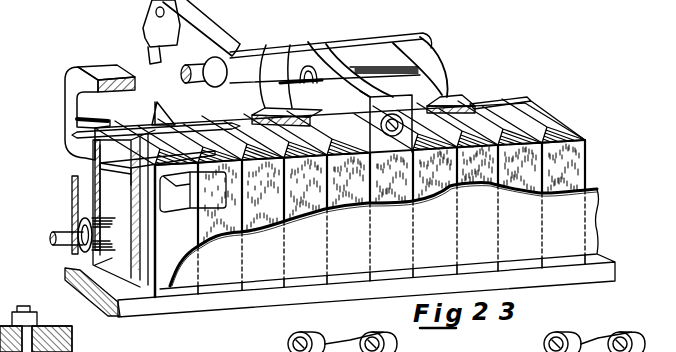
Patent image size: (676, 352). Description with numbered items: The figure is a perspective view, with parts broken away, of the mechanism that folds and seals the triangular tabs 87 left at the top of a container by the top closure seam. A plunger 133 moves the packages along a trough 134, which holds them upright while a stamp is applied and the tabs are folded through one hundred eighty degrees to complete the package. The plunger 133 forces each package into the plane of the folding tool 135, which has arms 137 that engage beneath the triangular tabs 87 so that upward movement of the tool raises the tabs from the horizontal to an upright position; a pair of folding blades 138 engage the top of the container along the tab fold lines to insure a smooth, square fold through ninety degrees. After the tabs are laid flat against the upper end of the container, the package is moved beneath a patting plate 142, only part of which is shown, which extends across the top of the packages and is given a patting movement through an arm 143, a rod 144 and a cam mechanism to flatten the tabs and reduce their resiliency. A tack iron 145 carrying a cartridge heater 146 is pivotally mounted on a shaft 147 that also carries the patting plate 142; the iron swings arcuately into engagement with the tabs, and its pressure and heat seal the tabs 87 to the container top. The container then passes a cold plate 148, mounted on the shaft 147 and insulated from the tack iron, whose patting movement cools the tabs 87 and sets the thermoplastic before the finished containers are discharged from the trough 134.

The triangular tabs 87 is at (572, 130).
The plunger 133 is at (82, 291).
The trough 134 is at (196, 303).
The folding tool 135 is at (87, 77).
The arms 137 is at (185, 208).
The folding blades 138 is at (93, 156).
The patting plate 142 is at (318, 112).
The arm 143 is at (193, 44).
The rod 144 is at (143, 58).
The tack iron 145 is at (387, 110).
The cartridge heater 146 is at (440, 95).
The shaft 147 is at (228, 48).
The cold plate 148 is at (492, 102).